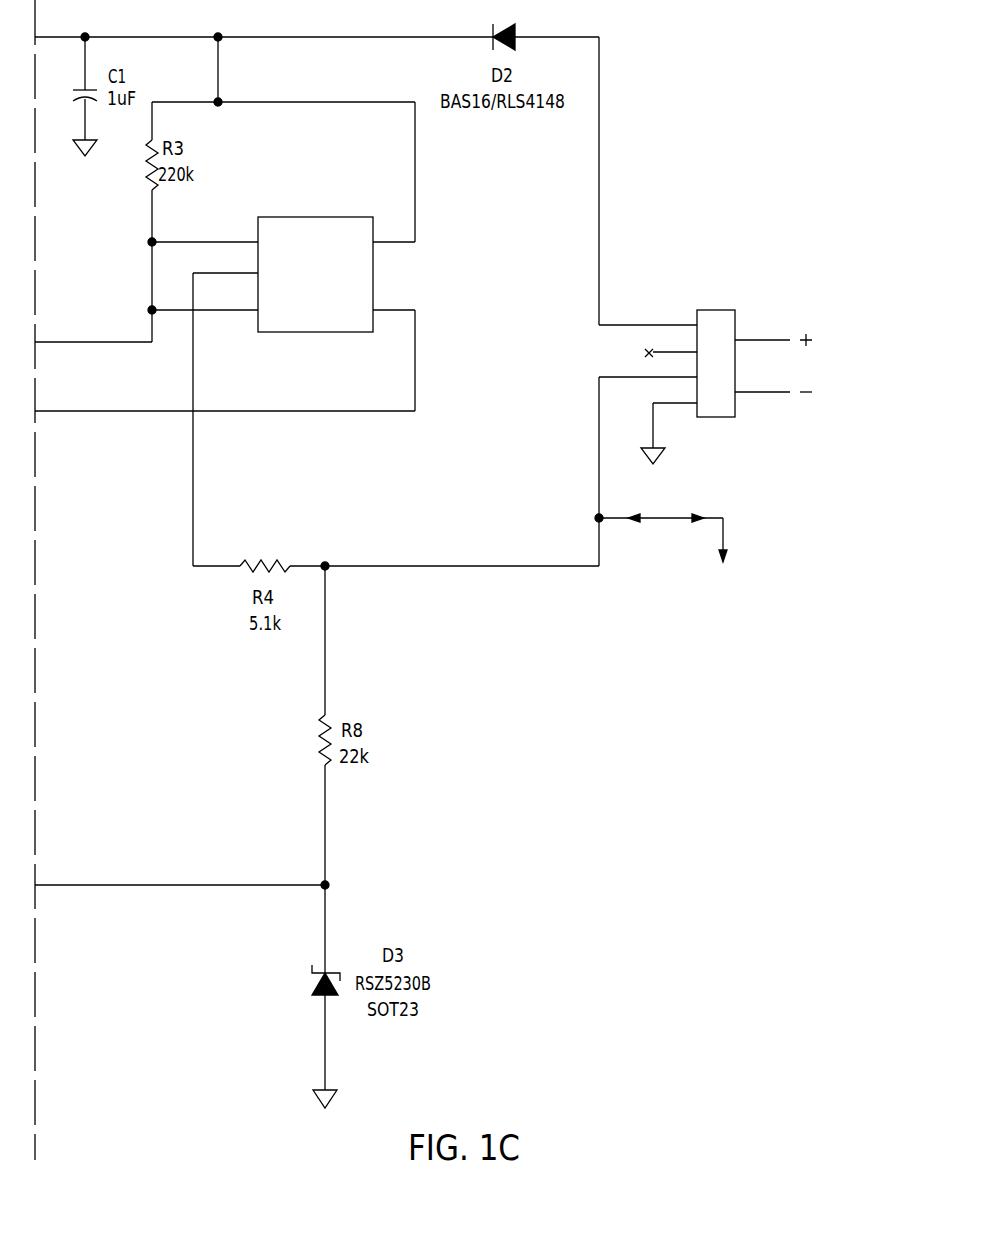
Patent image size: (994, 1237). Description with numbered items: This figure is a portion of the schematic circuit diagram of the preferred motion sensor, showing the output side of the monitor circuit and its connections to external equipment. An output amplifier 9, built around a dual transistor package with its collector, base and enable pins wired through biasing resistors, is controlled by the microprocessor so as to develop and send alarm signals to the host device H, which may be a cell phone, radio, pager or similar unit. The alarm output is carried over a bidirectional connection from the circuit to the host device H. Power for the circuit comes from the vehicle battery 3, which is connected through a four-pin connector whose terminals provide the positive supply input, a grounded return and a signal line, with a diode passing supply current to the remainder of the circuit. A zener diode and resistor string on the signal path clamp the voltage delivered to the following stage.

The output amplifier 9 is at (341, 217).
The vehicle battery 3 is at (735, 310).
The host device H is at (719, 578).